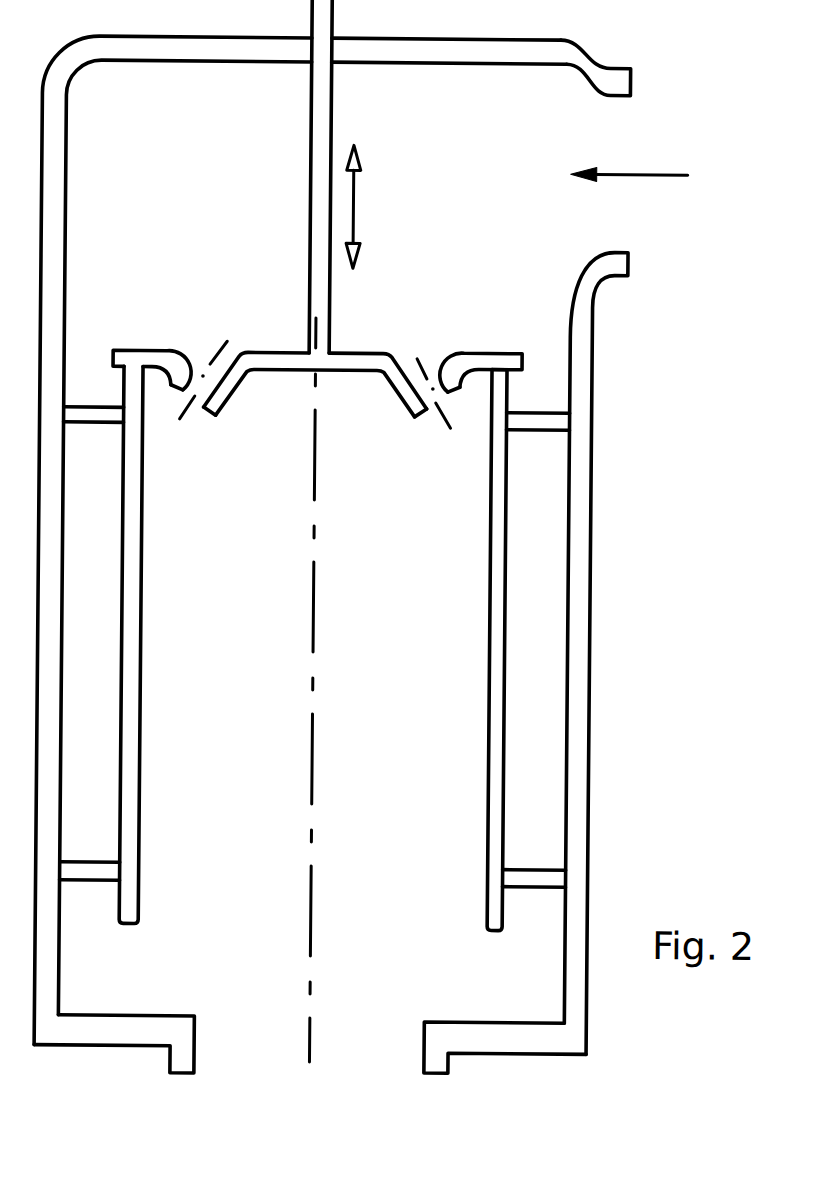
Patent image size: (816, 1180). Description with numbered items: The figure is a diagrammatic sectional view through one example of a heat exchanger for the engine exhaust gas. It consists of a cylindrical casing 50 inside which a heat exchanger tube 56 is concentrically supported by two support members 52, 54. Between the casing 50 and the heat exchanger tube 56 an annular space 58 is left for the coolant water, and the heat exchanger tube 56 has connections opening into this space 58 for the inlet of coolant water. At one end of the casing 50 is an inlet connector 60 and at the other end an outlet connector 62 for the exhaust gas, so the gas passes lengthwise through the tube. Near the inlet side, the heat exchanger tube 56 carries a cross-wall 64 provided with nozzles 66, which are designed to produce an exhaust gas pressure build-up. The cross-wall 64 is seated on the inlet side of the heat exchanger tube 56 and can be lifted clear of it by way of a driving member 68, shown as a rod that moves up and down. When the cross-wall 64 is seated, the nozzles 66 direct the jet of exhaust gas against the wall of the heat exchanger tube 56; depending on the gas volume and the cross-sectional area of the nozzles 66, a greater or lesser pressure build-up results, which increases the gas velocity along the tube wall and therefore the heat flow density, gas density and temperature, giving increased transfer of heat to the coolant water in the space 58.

The cylindrical casing 50 is at (590, 473).
The support member 52 is at (560, 422).
The support member 54 is at (558, 880).
The heat exchanger tube 56 is at (503, 563).
The space 58 is at (540, 773).
The inlet connector 60 is at (627, 108).
The outlet connector 62 is at (248, 1058).
The cross-wall 64 is at (481, 345).
The nozzles 66 is at (432, 407).
The driving member 68 is at (322, 123).